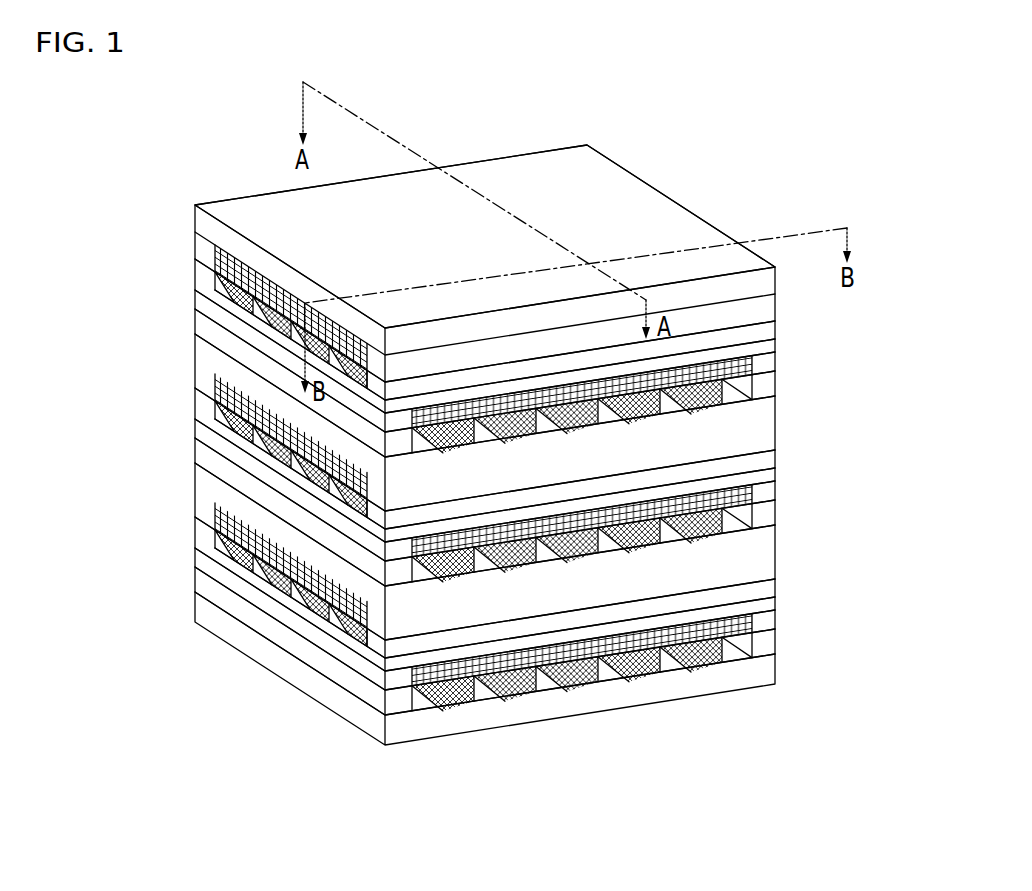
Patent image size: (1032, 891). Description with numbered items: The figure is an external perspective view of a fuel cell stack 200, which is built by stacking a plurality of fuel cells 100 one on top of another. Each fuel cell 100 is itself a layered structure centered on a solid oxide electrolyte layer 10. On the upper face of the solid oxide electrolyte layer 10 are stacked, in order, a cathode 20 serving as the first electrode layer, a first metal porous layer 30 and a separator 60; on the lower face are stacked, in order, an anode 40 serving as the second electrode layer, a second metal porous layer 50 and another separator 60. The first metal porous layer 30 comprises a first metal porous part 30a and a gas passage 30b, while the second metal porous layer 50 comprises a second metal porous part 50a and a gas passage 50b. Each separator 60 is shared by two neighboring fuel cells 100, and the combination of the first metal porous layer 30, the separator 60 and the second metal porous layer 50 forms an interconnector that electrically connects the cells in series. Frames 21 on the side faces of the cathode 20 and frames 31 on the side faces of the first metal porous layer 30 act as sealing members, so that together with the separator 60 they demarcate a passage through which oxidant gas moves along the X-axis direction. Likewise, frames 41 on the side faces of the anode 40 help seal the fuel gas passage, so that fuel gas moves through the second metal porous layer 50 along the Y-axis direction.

The fuel cell 100 is at (125, 192).
The fuel cell stack 200 is at (905, 92).
The solid oxide electrolyte layer 10 is at (773, 345).
The cathode 20 is at (240, 312).
The frame 21 is at (765, 333).
The first metal porous layer 30 is at (222, 415).
The first metal porous part 30a is at (212, 258).
The gas passage 30b is at (213, 296).
The frame 31 is at (203, 247).
The anode 40 is at (523, 500).
The frame 41 is at (770, 363).
The second metal porous layer 50 is at (553, 512).
The second metal porous part 50a is at (762, 398).
The gas passage 50b is at (670, 413).
The separator 60 is at (597, 170).